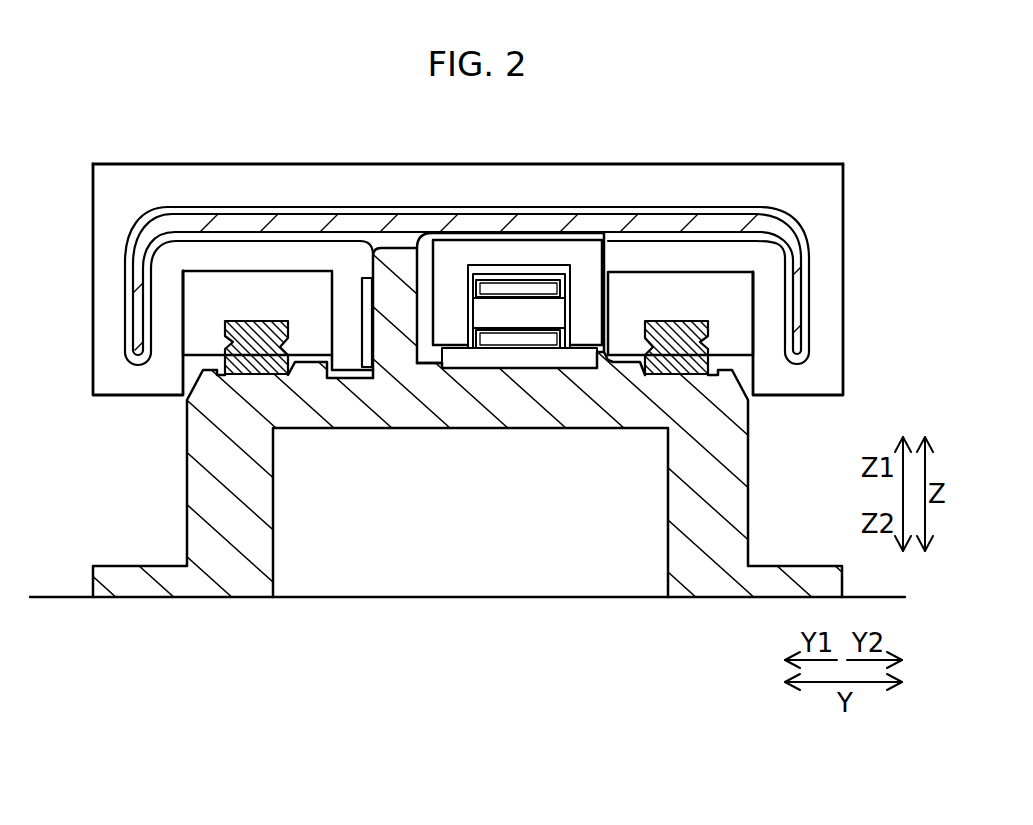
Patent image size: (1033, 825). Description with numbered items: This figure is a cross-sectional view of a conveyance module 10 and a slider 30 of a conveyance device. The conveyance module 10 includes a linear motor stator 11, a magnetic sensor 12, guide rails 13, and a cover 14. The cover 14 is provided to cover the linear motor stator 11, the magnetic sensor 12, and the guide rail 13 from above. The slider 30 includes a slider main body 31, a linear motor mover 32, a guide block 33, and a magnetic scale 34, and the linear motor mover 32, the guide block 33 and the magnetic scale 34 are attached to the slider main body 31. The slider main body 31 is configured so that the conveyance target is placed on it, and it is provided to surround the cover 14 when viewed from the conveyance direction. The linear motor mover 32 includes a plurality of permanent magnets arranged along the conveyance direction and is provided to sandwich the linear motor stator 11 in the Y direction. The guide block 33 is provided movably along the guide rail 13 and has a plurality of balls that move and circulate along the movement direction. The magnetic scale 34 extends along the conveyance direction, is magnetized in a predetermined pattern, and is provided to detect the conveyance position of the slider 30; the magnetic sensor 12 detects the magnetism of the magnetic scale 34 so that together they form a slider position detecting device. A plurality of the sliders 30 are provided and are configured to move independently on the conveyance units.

The conveyance module 10 is at (770, 437).
The linear motor stator 11 is at (510, 322).
The magnetic sensor 12 is at (374, 350).
The guide rail 13 is at (289, 342).
The cover 14 is at (795, 237).
The slider 30 is at (768, 137).
The slider main body 31 is at (573, 164).
The linear motor mover 32 is at (490, 240).
The guide block 33 is at (270, 271).
The magnetic scale 34 is at (358, 290).